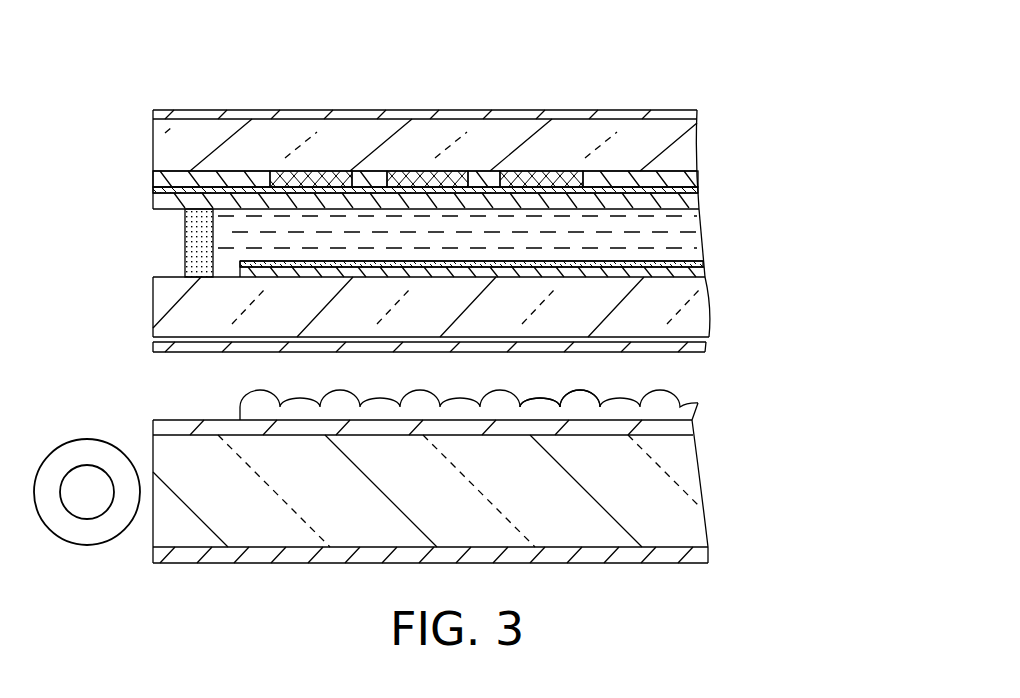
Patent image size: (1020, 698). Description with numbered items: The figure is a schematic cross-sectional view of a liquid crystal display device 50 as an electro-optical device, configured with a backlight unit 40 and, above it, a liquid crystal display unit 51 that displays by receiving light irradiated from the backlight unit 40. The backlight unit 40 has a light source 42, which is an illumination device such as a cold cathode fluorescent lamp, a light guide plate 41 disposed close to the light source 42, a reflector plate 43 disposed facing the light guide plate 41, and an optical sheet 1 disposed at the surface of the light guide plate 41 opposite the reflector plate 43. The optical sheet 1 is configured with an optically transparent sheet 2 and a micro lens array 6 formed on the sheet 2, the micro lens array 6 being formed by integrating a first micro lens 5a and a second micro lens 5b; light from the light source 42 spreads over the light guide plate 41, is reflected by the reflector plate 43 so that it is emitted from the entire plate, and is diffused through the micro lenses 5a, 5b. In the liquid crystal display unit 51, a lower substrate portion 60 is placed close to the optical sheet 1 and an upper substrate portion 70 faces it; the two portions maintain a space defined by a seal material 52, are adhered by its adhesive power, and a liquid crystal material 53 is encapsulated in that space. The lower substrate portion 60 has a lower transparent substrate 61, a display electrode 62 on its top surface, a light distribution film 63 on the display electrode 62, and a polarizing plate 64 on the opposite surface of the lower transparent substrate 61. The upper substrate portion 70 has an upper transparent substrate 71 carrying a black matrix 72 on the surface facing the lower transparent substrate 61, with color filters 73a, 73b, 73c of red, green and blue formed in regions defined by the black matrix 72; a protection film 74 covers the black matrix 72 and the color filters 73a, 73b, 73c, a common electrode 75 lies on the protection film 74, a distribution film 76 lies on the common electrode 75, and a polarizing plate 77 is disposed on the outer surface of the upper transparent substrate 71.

The liquid crystal display device 50 is at (765, 38).
The liquid crystal display unit 51 is at (820, 105).
The upper substrate portion 70 is at (812, 134).
The lower substrate portion 60 is at (812, 287).
The polarizing plate 77 is at (699, 113).
The upper transparent substrate 71 is at (699, 142).
The black matrix 72 is at (193, 178).
The color filter (R) 73a is at (305, 171).
The color filter (G) 73b is at (440, 171).
The color filter (B) 73c is at (541, 171).
The protection film 74 is at (699, 186).
The common electrode 75 is at (699, 191).
The distribution film 76 is at (699, 204).
The liquid crystal material 53 is at (700, 242).
The seal material 52 is at (185, 247).
The light distribution film 63 is at (702, 264).
The display electrode 62 is at (704, 274).
The lower transparent substrate 61 is at (704, 305).
The polarizing plate 64 is at (704, 348).
The optical sheet 1 is at (782, 412).
The backlight unit 40 is at (816, 387).
The micro lens array 6 is at (236, 393).
The first micro lens 5a is at (583, 397).
The second micro lens 5b is at (541, 398).
The sheet 2 is at (694, 428).
The light guide plate 41 is at (701, 495).
The reflector plate 43 is at (706, 558).
The light source 42 is at (65, 440).